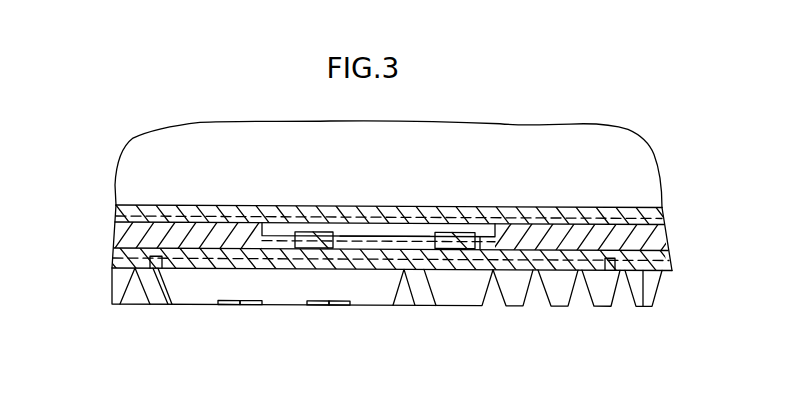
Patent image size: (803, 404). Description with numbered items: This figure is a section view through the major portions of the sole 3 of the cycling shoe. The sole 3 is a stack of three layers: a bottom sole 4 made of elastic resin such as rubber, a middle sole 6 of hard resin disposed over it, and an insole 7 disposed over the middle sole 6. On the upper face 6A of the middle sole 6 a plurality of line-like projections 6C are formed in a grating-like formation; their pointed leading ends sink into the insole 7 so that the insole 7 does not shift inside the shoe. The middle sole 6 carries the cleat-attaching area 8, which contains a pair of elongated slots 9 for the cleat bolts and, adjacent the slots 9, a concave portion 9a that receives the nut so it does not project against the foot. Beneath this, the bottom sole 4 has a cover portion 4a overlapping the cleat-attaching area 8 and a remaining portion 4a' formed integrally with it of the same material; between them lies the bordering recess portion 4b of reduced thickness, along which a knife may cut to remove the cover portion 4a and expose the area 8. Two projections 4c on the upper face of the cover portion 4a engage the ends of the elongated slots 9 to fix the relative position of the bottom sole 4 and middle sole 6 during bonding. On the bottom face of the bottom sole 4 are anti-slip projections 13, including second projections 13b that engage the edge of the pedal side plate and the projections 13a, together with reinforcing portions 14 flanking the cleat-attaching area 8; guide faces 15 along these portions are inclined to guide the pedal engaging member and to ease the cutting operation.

The sole 3 is at (95, 249).
The bottom sole 4 is at (675, 279).
The cover portion 4a is at (355, 317).
The remaining portion 4a' is at (651, 319).
The bordering recess portion 4b is at (160, 305).
The projections 4c is at (318, 231).
The middle sole 6 is at (665, 233).
The upper face 6A is at (637, 212).
The line-like projections 6C is at (243, 206).
The insole 7 is at (163, 206).
The cleat-attaching area 8 is at (380, 244).
The elongated slots 9 is at (404, 229).
The concave portion 9a is at (495, 235).
The anti-slip projections 13 is at (353, 328).
The bump electrode 13a is at (120, 305).
The second projections 13b is at (523, 307).
The reinforcing portions 14 is at (228, 305).
The guide faces 15 is at (361, 292).